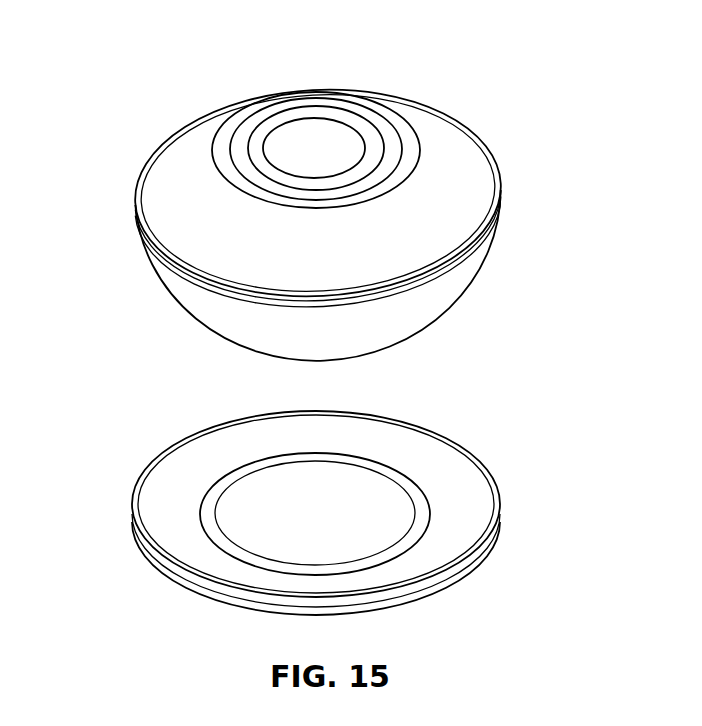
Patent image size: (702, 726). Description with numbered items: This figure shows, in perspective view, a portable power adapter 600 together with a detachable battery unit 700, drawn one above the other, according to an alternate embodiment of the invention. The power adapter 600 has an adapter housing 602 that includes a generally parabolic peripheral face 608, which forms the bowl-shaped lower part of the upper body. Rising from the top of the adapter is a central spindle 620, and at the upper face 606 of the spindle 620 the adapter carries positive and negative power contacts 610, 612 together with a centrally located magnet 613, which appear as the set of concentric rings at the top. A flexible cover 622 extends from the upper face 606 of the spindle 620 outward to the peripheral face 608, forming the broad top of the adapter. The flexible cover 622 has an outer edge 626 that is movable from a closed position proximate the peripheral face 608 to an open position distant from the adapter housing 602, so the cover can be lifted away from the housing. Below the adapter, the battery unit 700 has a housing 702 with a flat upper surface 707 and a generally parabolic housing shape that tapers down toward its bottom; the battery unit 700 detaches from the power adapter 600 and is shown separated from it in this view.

The portable power adapter 600 is at (140, 109).
The adapter housing 602 is at (445, 302).
The upper face 606 is at (248, 128).
The peripheral face 608 is at (297, 350).
The positive power contact 610 is at (365, 128).
The negative power contact 612 is at (402, 127).
The magnet 613 is at (313, 128).
The central spindle 620 is at (346, 109).
The flexible cover 622 is at (472, 172).
The outer edge 626 is at (488, 208).
The detachable battery unit 700 is at (139, 415).
The housing 702 is at (435, 589).
The flat upper surface 707 is at (320, 420).